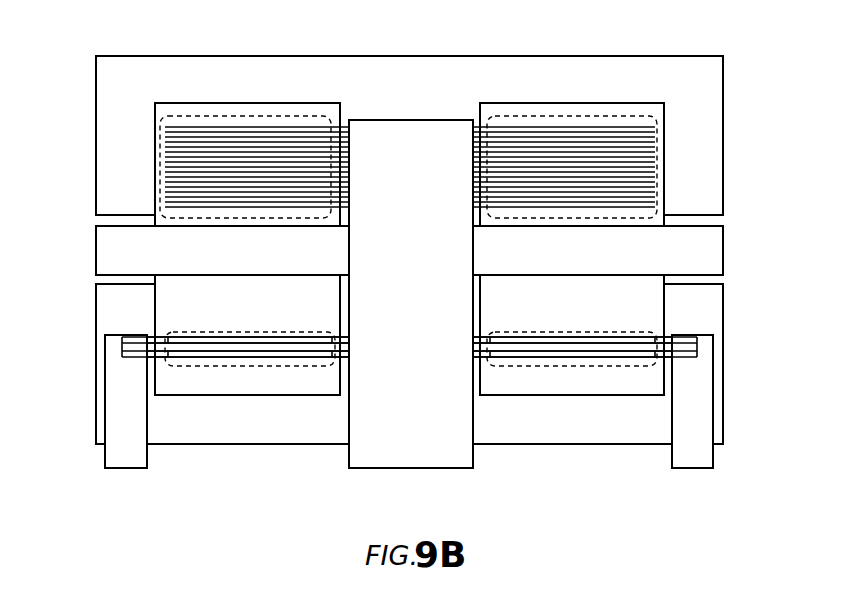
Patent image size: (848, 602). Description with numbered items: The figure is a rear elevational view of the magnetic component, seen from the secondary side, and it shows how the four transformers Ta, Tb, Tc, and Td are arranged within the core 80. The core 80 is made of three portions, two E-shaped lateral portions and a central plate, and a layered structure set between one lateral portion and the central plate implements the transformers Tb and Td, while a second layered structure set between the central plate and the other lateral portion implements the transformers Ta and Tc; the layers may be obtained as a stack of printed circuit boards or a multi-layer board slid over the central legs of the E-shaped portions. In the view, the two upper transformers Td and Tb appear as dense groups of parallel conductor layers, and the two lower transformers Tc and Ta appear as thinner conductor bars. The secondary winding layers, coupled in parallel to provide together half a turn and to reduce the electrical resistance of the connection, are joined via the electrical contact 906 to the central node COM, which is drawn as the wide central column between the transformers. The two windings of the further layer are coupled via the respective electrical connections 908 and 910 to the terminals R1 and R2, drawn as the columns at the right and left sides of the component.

The core 80 is at (110, 54).
The electrical contact 906 is at (488, 458).
The electrical connection 908 is at (729, 455).
The electrical connection 910 is at (91, 453).
The transformer Ta is at (601, 321).
The transformer Tb is at (638, 103).
The transformer Tc is at (227, 321).
The transformer Td is at (301, 103).
The terminal R1 is at (692, 418).
The terminal R2 is at (126, 418).
The central node COM is at (411, 310).